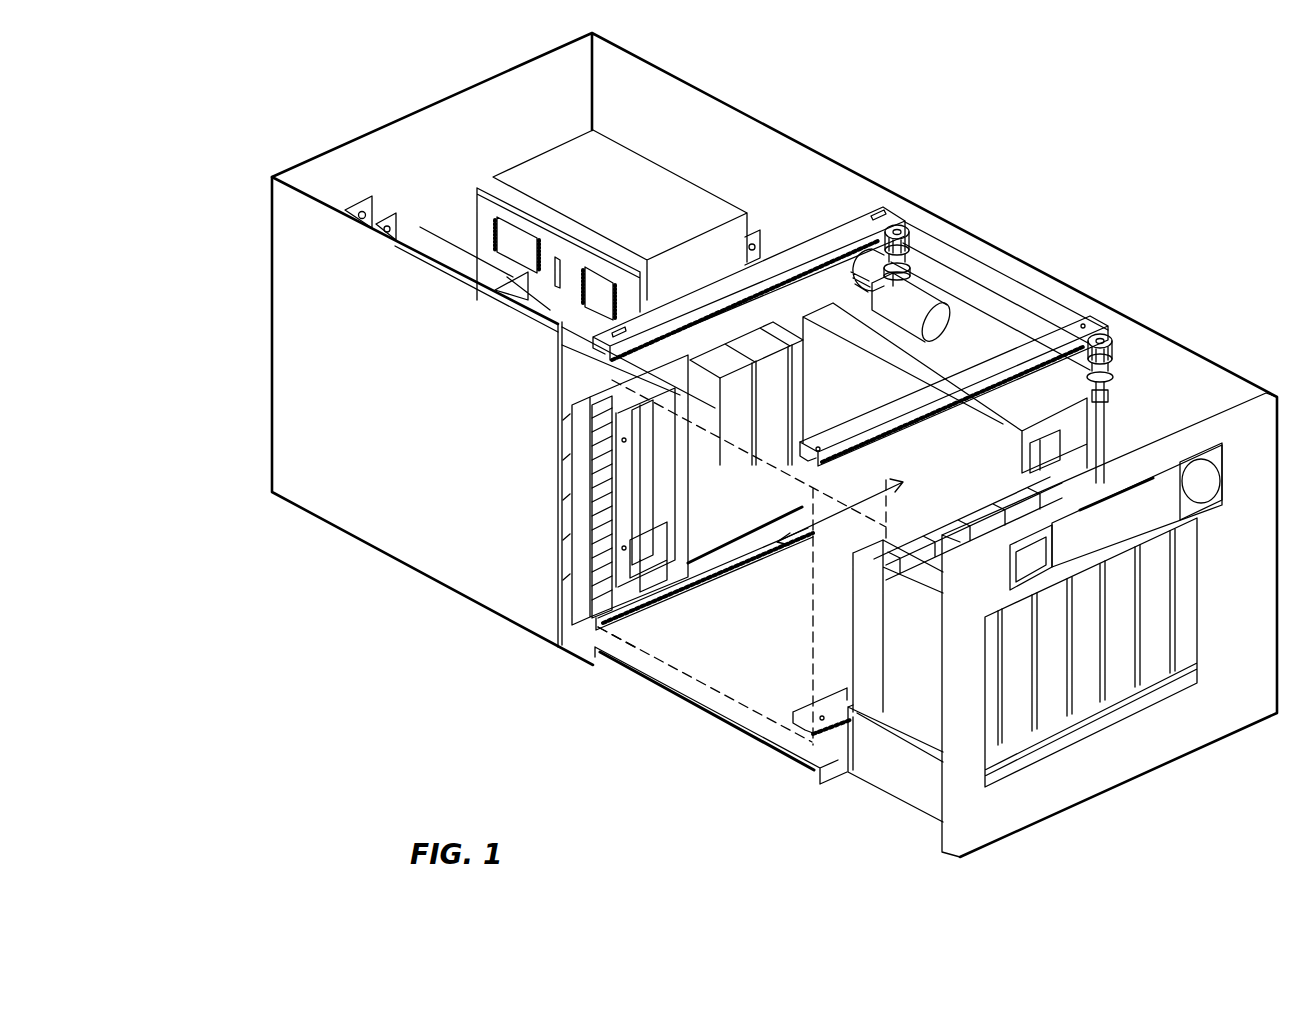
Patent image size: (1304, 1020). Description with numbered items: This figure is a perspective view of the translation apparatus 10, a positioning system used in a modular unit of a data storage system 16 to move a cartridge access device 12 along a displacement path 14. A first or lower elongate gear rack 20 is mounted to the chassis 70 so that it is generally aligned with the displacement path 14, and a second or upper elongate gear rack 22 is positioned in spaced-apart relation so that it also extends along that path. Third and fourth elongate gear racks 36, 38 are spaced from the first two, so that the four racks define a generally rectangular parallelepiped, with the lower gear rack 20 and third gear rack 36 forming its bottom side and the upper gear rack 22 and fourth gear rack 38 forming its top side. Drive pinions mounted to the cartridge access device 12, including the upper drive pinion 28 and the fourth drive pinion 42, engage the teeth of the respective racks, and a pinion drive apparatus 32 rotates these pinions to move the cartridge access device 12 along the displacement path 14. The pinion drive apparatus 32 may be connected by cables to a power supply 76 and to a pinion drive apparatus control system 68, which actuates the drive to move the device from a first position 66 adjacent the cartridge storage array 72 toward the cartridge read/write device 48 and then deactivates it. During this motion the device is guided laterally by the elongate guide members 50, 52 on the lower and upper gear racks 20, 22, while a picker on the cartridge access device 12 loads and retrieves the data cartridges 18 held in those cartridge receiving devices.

The translation apparatus 10 is at (1082, 211).
The cartridge access device 12 is at (847, 328).
The displacement path 14 is at (852, 490).
The data storage system 16 is at (268, 300).
The data cartridge 18 is at (672, 278).
The first or lower elongate gear rack 20 is at (790, 738).
The second or upper elongate gear rack 22 is at (1100, 322).
The second or upper drive pinion 28 is at (1114, 342).
The pinion drive apparatus 32 is at (895, 315).
The third elongate gear rack 36 is at (600, 630).
The fourth elongate gear rack 38 is at (899, 218).
The fourth drive pinion 42 is at (920, 248).
The cartridge read/write device 48 is at (563, 600).
The elongate guide member 50 is at (803, 710).
The elongate guide member 52 is at (812, 445).
The first position 66 is at (1050, 410).
The pinion drive apparatus control system 68 is at (478, 212).
The chassis 70 is at (797, 779).
The cartridge storage array 72 is at (882, 682).
The power supply 76 is at (652, 182).